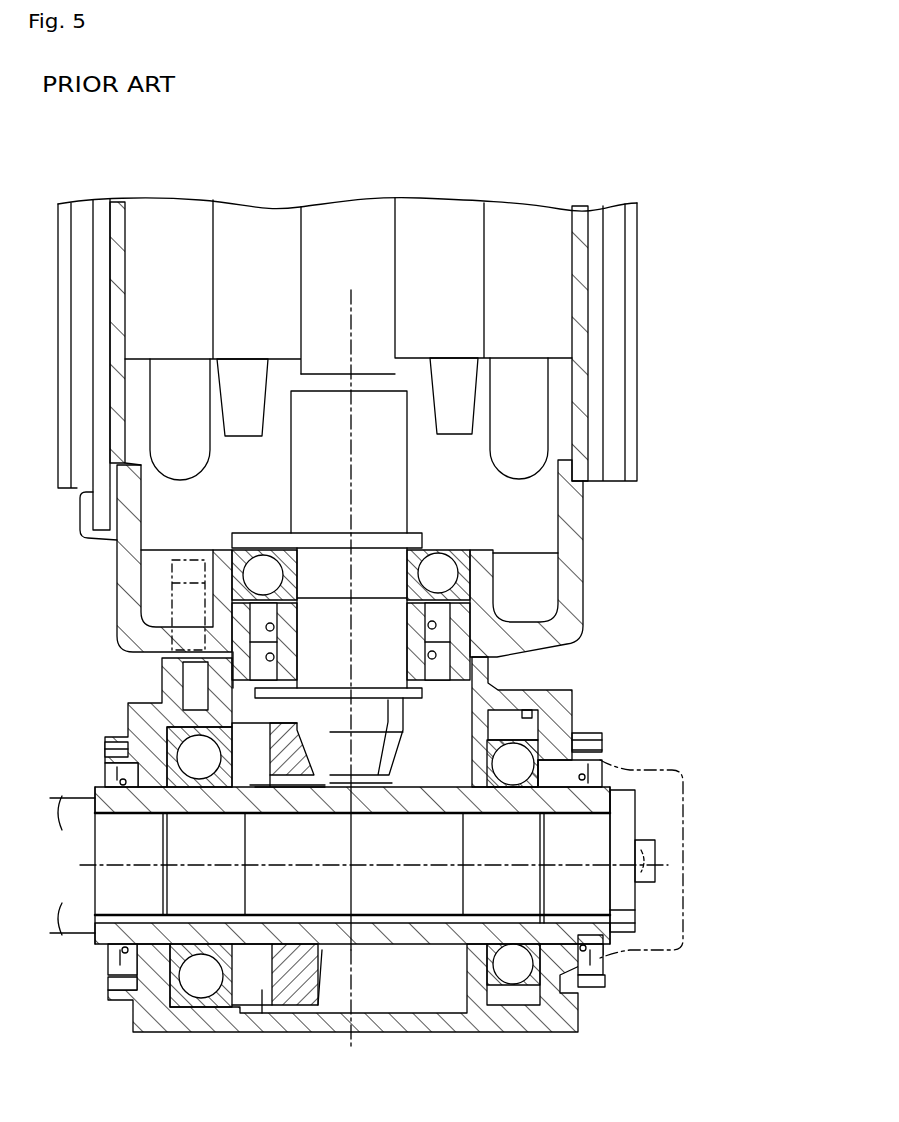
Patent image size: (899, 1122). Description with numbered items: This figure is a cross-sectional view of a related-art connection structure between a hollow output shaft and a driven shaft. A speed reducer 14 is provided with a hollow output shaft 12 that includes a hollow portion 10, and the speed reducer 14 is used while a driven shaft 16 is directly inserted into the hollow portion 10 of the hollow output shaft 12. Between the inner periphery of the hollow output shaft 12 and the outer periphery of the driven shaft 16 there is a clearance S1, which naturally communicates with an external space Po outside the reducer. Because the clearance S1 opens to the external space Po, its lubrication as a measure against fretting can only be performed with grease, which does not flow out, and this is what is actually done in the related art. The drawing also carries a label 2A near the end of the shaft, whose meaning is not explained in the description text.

The speed reducer 14 is at (650, 728).
The driven shaft 16 is at (113, 851).
The hollow output shaft 12 is at (640, 800).
The hollow portion 10 is at (640, 834).
The shaft end face 2A is at (620, 897).
The clearance S1 is at (268, 815).
The external space Po is at (795, 771).